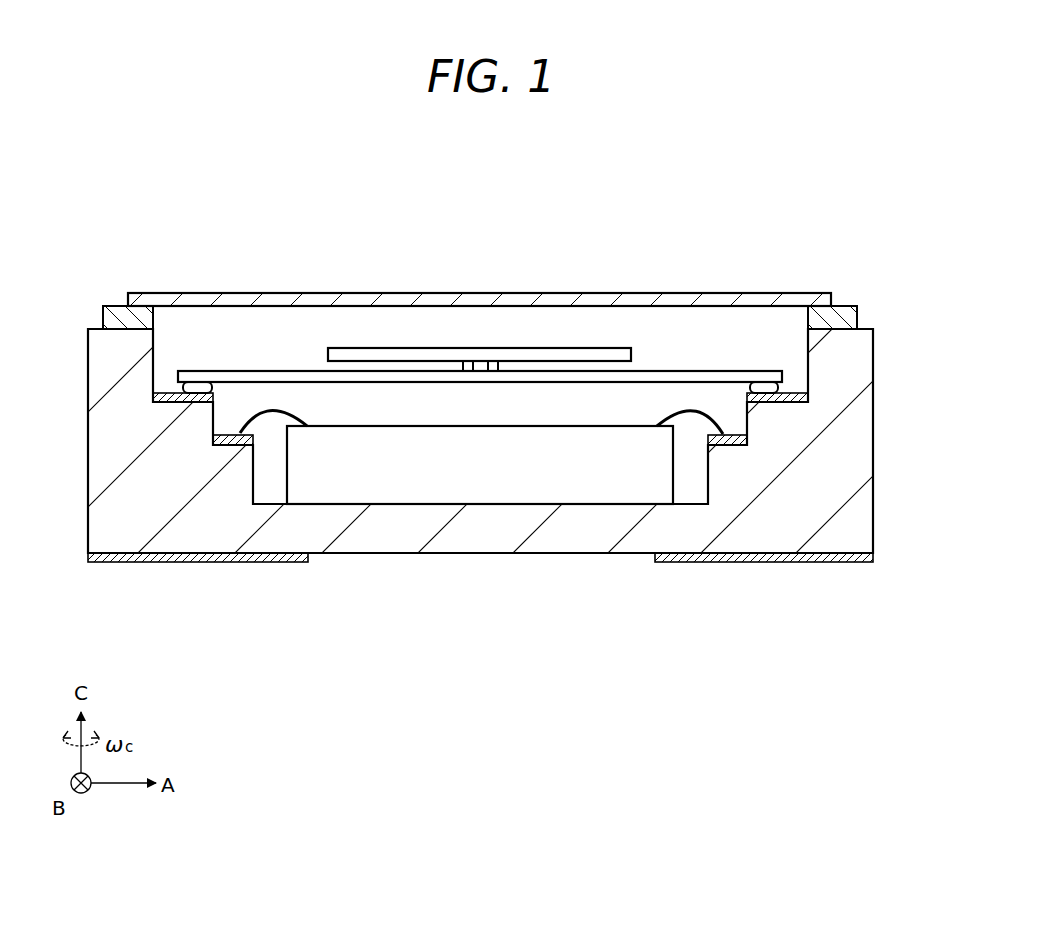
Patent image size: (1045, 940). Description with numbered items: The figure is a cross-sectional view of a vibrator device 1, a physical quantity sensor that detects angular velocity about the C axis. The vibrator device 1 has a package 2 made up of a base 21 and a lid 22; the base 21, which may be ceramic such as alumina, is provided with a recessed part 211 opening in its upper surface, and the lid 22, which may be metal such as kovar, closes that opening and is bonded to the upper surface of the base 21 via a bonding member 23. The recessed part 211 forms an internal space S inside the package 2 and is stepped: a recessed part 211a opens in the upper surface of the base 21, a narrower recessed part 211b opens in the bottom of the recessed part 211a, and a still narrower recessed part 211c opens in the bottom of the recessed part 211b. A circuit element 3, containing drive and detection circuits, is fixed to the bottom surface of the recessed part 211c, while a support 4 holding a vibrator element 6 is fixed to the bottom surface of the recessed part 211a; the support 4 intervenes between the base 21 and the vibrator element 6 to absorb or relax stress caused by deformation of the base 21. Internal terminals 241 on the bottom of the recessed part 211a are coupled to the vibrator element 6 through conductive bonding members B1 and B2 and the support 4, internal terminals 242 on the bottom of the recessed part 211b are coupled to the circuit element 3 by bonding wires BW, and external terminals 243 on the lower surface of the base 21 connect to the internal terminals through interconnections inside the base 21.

The vibrator device 1 is at (833, 196).
The package 2 is at (73, 285).
The base 21 is at (852, 435).
The recessed part 211 is at (807, 662).
The recessed part 211a is at (775, 400).
The recessed part 211b is at (727, 443).
The recessed part 211c is at (612, 505).
The lid 22 is at (553, 300).
The bonding member 23 is at (845, 320).
The internal terminal 241 is at (170, 393).
The internal terminal 242 is at (220, 446).
The external terminal 243 is at (125, 563).
The circuit element 3 is at (430, 462).
The support 4 is at (367, 378).
The vibrator element 6 is at (430, 348).
The internal space S is at (347, 336).
The bonding member B1 is at (210, 383).
The bonding member B2 is at (493, 361).
The bonding wire BW is at (278, 404).